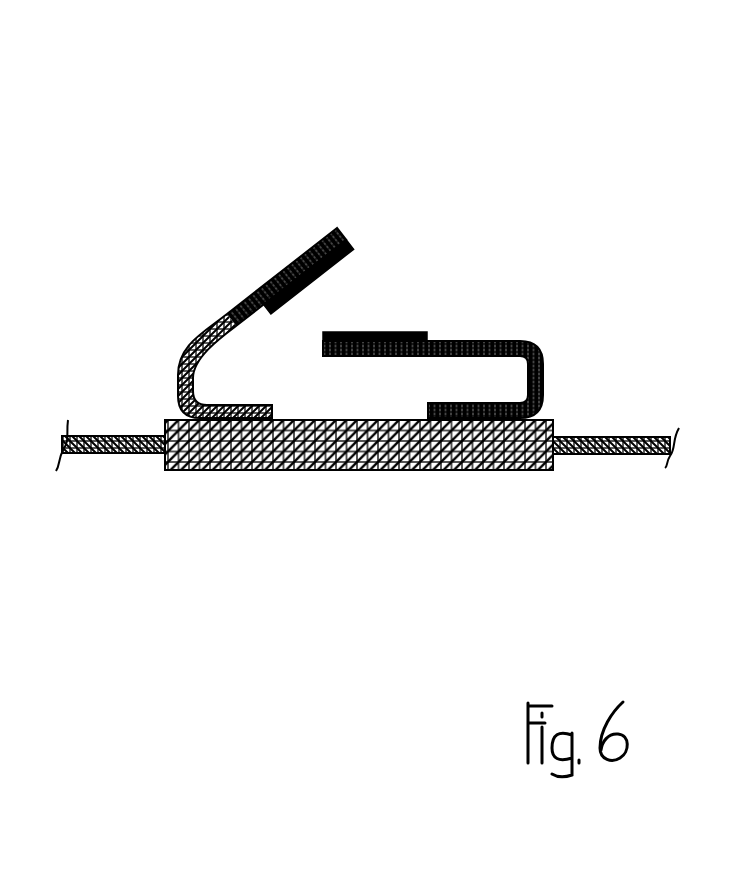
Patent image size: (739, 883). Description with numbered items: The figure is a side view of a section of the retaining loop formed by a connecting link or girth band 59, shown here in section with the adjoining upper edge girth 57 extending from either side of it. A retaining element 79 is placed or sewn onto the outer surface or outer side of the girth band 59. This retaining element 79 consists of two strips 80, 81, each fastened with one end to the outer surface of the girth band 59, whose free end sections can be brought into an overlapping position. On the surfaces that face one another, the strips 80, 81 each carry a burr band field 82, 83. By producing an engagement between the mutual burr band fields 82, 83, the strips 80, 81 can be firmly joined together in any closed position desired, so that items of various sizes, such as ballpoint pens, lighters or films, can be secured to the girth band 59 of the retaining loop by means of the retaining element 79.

The retaining element 79 is at (349, 217).
The strip 80 is at (196, 345).
The strip 81 is at (545, 362).
The burr band field 82 is at (316, 288).
The burr band field 83 is at (401, 330).
The upper edge girth 57 is at (110, 455).
The connecting link or girth band 59 is at (382, 455).